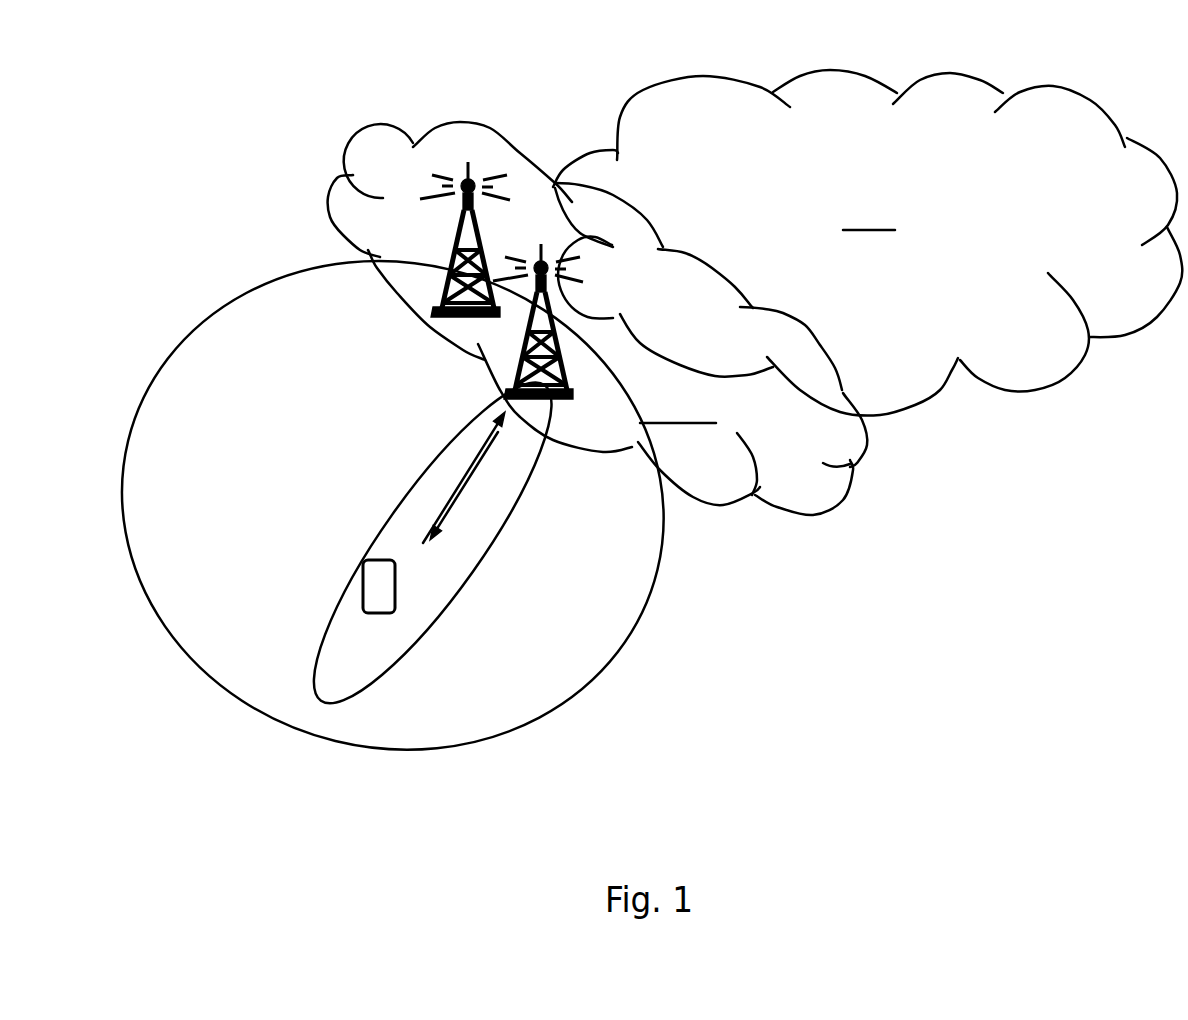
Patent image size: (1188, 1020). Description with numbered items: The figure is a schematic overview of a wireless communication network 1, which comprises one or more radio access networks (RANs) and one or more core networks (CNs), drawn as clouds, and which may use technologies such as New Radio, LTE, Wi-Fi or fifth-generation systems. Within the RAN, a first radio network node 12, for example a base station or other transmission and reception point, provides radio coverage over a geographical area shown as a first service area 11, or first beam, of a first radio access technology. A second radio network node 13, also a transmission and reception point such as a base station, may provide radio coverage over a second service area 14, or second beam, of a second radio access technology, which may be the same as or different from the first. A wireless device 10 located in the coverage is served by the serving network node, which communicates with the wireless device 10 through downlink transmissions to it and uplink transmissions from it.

The wireless communication network 1 is at (289, 82).
The wireless device 10 is at (365, 583).
The first service area 11 is at (231, 497).
The first radio network node 12 is at (483, 248).
The second radio network node 13 is at (584, 318).
The second service area 14 is at (381, 663).